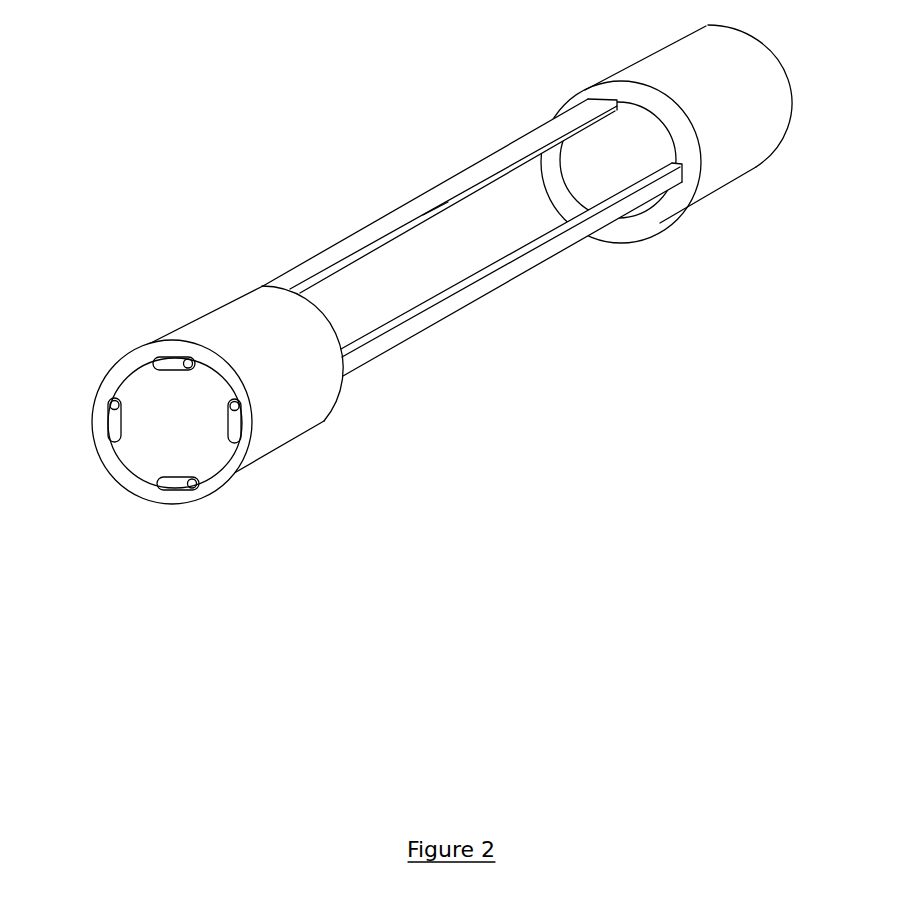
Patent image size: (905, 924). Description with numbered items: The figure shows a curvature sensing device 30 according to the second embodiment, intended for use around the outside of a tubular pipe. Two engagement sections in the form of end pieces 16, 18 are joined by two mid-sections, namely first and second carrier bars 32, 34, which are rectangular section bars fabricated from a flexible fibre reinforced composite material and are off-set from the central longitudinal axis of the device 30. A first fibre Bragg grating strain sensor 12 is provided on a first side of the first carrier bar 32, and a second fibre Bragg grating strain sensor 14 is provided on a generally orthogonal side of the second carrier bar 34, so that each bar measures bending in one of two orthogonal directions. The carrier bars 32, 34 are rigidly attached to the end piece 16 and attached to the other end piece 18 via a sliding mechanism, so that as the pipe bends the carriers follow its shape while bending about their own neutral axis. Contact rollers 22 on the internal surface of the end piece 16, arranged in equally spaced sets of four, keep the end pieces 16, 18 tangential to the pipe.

The curvature sensing device 30 is at (419, 279).
The first fibre Bragg grating strain sensor 12 is at (440, 146).
The second fibre Bragg grating strain sensor 14 is at (511, 314).
The end piece 16 is at (195, 422).
The end piece 18 is at (752, 156).
The contact rollers 22 is at (113, 428).
The first carrier bar 32 is at (550, 127).
The second carrier bar 34 is at (418, 327).